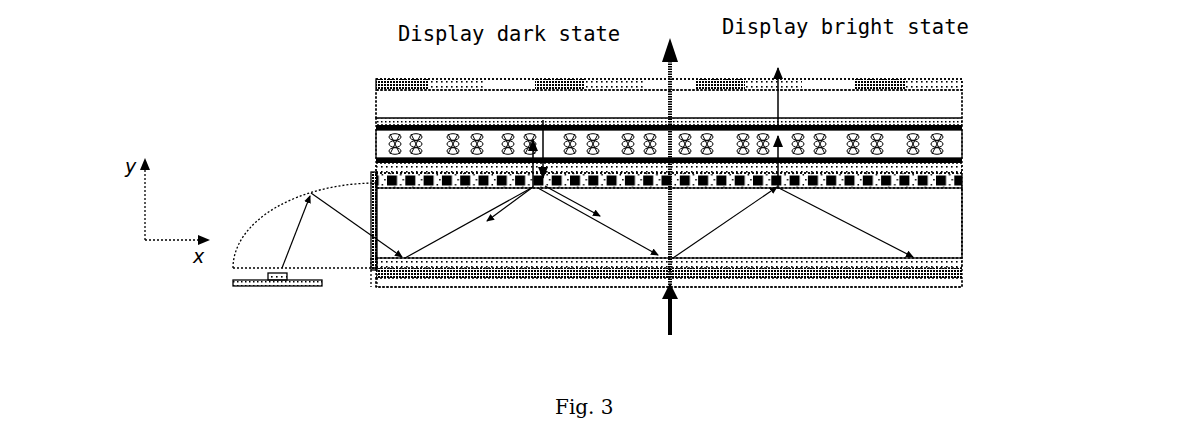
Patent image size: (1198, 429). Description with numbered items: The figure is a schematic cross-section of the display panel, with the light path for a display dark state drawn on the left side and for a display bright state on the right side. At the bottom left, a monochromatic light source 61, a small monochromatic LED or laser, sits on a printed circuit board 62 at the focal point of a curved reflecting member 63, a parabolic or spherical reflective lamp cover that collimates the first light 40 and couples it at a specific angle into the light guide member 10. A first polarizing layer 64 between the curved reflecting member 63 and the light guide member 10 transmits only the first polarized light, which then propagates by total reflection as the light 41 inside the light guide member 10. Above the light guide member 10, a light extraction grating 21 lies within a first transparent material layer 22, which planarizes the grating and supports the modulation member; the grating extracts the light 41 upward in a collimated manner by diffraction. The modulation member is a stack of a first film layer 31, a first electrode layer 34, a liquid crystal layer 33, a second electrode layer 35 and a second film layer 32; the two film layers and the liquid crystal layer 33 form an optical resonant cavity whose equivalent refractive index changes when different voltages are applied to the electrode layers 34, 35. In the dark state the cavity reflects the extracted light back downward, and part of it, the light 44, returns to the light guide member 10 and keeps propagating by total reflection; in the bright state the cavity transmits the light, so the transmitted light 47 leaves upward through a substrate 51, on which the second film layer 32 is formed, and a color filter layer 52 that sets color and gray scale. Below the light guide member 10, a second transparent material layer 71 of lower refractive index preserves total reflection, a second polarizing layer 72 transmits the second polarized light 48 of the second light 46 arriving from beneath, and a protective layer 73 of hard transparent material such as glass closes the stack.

The light guide member 10 is at (960, 226).
The light extraction grating 21 is at (962, 190).
The first transparent material layer 22 is at (962, 176).
The first film layer 31 is at (376, 169).
The second film layer 32 is at (376, 121).
The liquid crystal layer 33 is at (376, 148).
The first electrode layer 34 is at (962, 160).
The second electrode layer 35 is at (962, 127).
The first light 40 is at (302, 230).
The light propagating within the light guide member 41 is at (448, 237).
The light returning to the light guide member 44 is at (537, 190).
The second light 46 is at (673, 312).
The light transmitted from the modulation member 47 is at (765, 77).
The second polarized light 48 is at (653, 70).
The substrate 51 is at (962, 103).
The color filter layer 52 is at (962, 79).
The monochromatic light source 61 is at (290, 287).
The printed circuit board 62 is at (248, 287).
The curved reflecting member 63 is at (275, 205).
The first polarizing layer 64 is at (368, 268).
The second transparent material layer 71 is at (962, 262).
The second polarizing layer 72 is at (962, 271).
The protective layer 73 is at (962, 281).